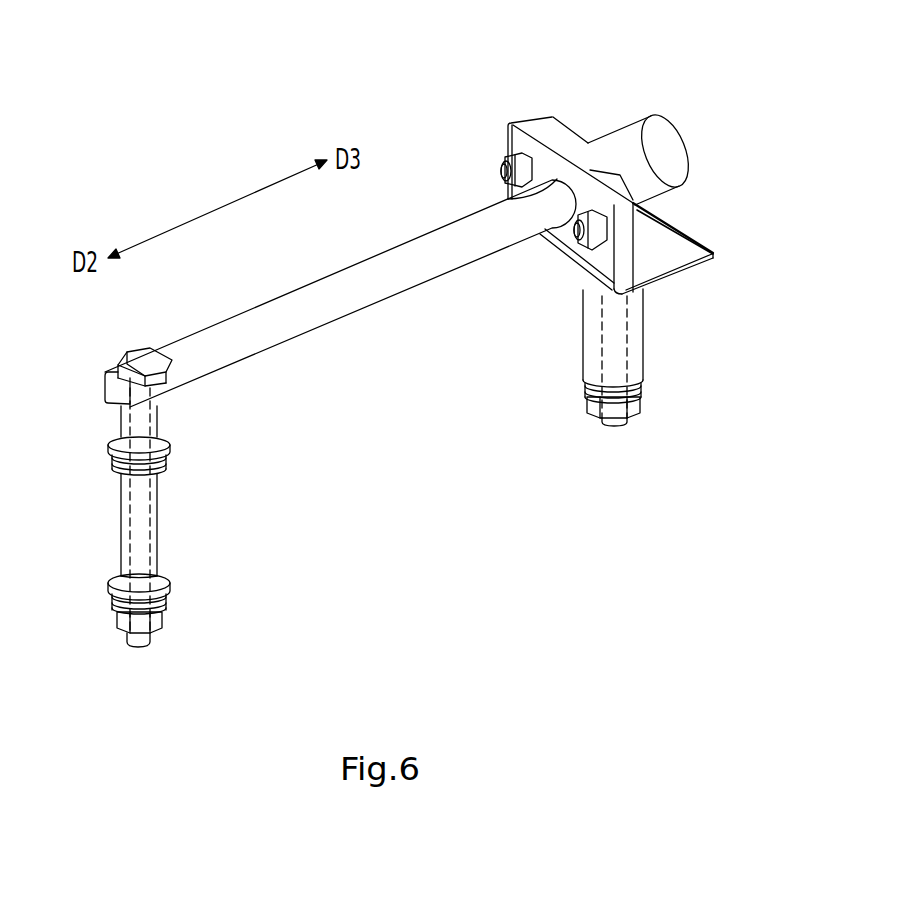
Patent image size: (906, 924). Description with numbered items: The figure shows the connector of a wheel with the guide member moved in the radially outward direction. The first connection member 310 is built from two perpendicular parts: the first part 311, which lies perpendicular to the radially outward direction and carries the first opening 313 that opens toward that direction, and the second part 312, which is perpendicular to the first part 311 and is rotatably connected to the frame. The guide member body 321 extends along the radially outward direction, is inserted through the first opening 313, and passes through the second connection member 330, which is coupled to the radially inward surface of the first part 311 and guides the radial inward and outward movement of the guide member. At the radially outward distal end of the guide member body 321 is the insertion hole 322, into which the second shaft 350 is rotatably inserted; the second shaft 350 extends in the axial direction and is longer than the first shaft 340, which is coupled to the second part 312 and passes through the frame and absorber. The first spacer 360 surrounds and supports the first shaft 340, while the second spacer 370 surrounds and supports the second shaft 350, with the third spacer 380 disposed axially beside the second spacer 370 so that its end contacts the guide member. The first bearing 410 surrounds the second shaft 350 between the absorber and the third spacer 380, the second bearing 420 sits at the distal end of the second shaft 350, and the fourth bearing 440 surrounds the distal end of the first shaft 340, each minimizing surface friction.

The first connection member 310 is at (507, 106).
The (1-1)-th part 311 is at (572, 237).
The (1-2)-th part 312 is at (663, 216).
The first opening 313 is at (508, 198).
The guide member body 321 is at (268, 300).
The insertion hole 322 is at (130, 367).
The second connection member 330 is at (637, 145).
The first shaft 340 is at (600, 358).
The second shaft 350 is at (122, 495).
The first spacer 360 is at (640, 325).
The second spacer 370 is at (122, 548).
The third spacer 380 is at (120, 422).
The first bearing 410 is at (117, 450).
The second bearing 420 is at (118, 612).
The fourth bearing 440 is at (583, 388).